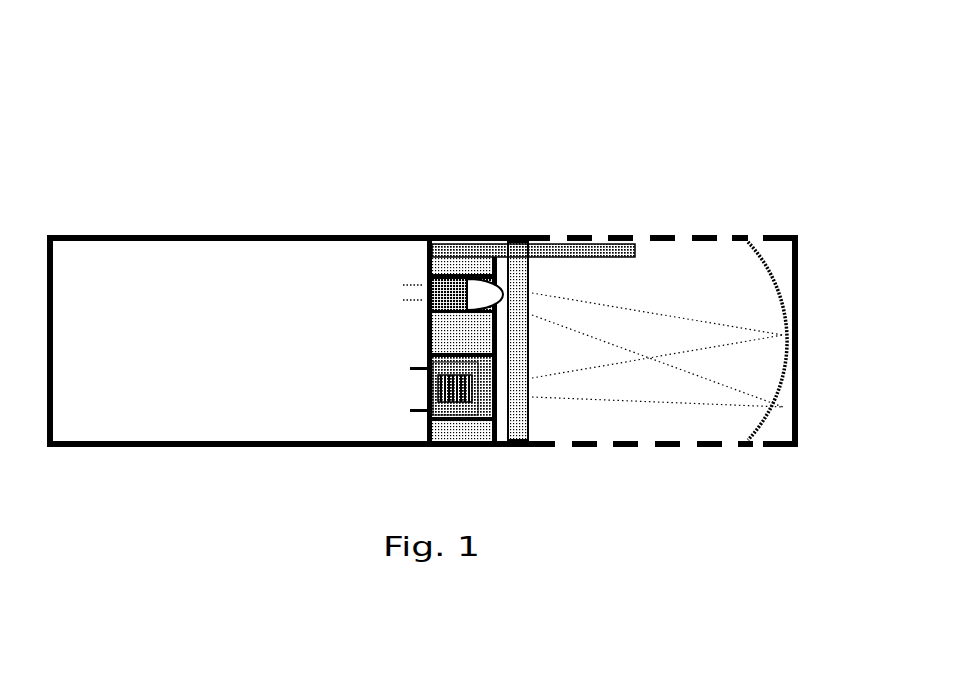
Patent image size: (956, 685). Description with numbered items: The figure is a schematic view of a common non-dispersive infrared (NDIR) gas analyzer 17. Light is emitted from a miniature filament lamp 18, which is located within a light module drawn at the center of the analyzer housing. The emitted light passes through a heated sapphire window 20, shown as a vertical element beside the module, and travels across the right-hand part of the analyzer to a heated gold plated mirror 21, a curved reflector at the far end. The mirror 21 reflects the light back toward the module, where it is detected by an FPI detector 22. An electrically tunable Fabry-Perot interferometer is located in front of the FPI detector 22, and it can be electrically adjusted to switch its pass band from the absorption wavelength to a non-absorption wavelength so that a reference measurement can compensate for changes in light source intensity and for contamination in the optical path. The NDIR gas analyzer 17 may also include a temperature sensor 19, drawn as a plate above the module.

The NDIR gas analyzer 17 is at (325, 215).
The miniature filament lamp 18 is at (482, 292).
The temperature sensor 19 is at (553, 250).
The heated sapphire window 20 is at (510, 250).
The heated gold plated mirror 21 is at (772, 260).
The FPI detector 22 is at (427, 322).